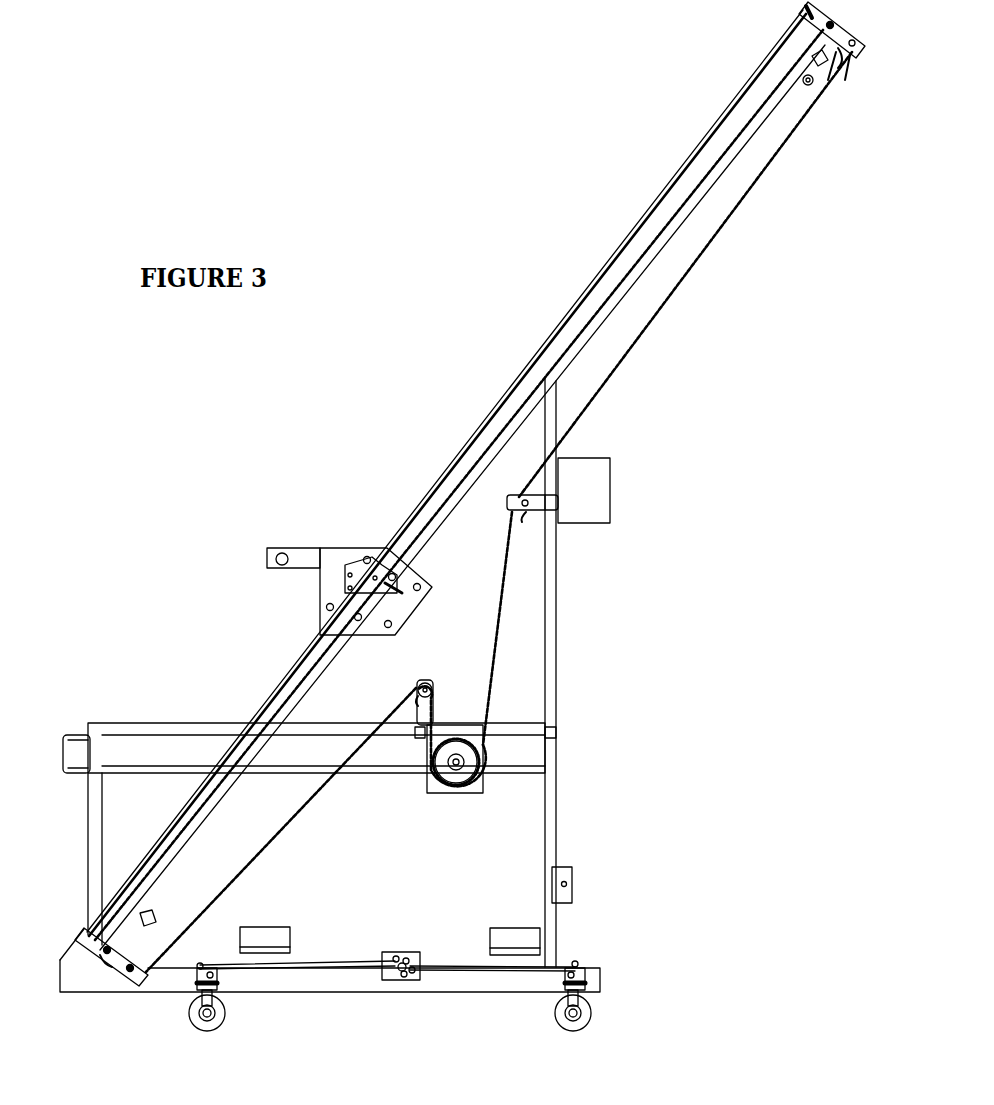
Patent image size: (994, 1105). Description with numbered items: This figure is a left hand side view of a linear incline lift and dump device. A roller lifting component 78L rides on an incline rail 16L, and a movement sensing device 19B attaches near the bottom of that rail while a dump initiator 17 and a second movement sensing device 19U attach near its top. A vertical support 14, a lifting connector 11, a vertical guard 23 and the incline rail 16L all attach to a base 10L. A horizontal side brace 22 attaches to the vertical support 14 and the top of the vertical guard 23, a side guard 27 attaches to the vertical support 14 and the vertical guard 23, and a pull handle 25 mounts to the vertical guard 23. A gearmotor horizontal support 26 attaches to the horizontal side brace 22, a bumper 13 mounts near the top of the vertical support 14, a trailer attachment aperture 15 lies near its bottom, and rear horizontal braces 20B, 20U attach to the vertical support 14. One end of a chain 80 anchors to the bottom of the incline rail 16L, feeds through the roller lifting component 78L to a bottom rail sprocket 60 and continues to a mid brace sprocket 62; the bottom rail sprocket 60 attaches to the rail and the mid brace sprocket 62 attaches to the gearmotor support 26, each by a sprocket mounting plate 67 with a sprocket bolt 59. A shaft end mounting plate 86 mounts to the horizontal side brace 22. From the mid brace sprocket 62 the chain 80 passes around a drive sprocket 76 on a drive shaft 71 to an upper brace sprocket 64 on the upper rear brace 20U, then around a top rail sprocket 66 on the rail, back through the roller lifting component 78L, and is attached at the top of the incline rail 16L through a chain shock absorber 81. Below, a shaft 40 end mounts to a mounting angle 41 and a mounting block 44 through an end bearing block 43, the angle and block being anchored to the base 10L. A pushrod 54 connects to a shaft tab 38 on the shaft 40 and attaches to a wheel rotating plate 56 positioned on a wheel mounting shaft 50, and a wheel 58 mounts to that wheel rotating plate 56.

The base 10L is at (600, 985).
The lifting connector 11 is at (265, 927).
The bumper 13 is at (605, 487).
The vertical support 14 is at (557, 420).
The trailer attachment aperture 15 is at (567, 884).
The incline rail 16L is at (667, 180).
The dump initiator 17 is at (803, 81).
The movement sensing device 19U is at (820, 50).
The movement sensing device 19B is at (145, 918).
The rear horizontal brace 20U is at (560, 509).
The rear horizontal brace 20B is at (556, 731).
The horizontal side brace 22 is at (190, 724).
The vertical guard 23 is at (96, 806).
The pull handle 25 is at (76, 735).
The gearmotor horizontal support 26 is at (413, 738).
The side guard 27 is at (130, 767).
The shaft tab 38 is at (407, 966).
The shaft 40 is at (398, 975).
The mounting angle 41 is at (392, 952).
The end bearing block 43 is at (406, 957).
The mounting block 44 is at (412, 975).
The wheel mounting shaft 50 is at (215, 978).
The pushrod 54 is at (342, 962).
The wheel rotating plate 56 is at (197, 976).
The wheel 58 is at (222, 1015).
The sprocket bolt 59 is at (842, 52).
The bottom rail sprocket 60 is at (110, 947).
The mid brace sprocket 62 is at (437, 692).
The upper brace sprocket 64 is at (524, 520).
The top rail sprocket 66 is at (848, 56).
The sprocket mounting plate 67 is at (853, 52).
The drive shaft 71 is at (460, 762).
The drive sprocket 76 is at (455, 778).
The roller lifting component 78L is at (325, 530).
The chain 80 is at (617, 255).
The chain shock absorber 81 is at (803, 20).
The shaft end mounting plate 86 is at (483, 786).